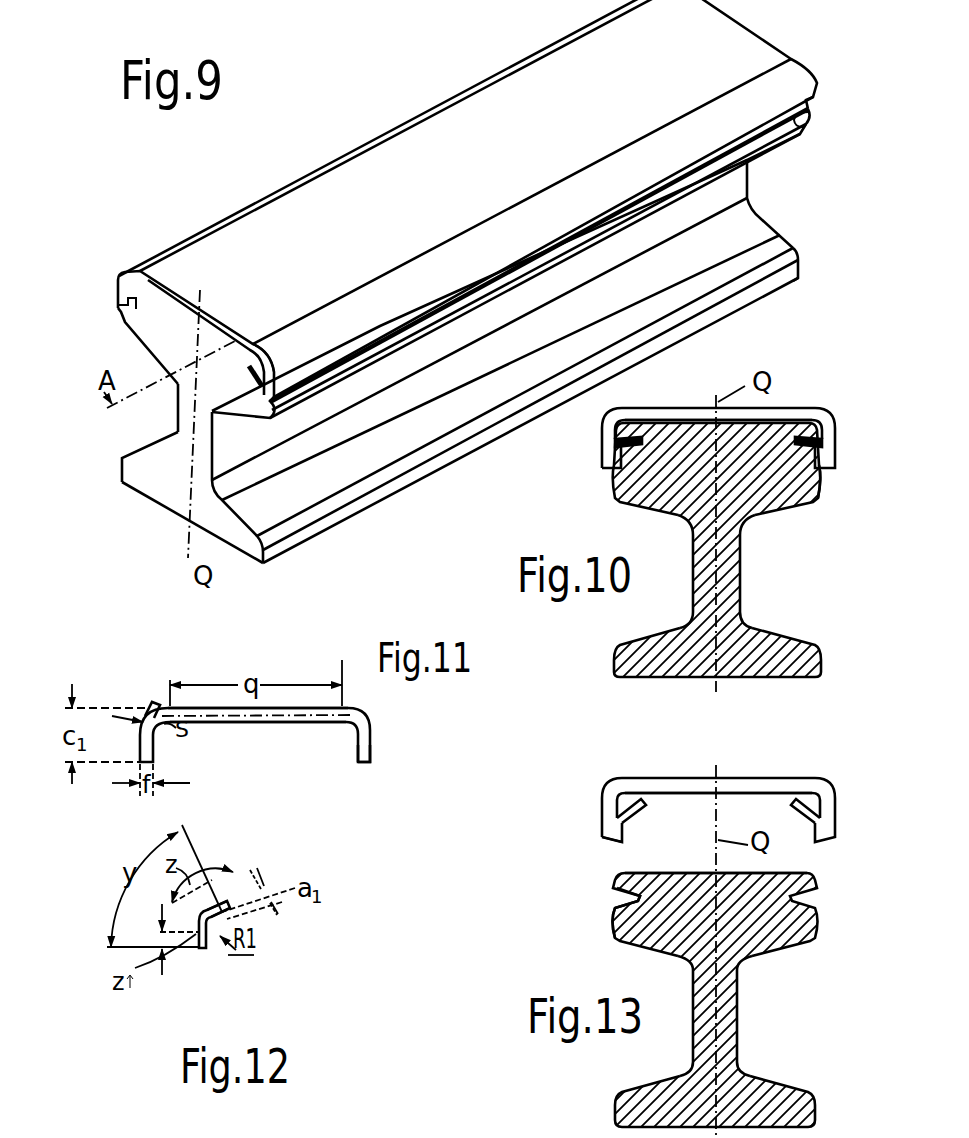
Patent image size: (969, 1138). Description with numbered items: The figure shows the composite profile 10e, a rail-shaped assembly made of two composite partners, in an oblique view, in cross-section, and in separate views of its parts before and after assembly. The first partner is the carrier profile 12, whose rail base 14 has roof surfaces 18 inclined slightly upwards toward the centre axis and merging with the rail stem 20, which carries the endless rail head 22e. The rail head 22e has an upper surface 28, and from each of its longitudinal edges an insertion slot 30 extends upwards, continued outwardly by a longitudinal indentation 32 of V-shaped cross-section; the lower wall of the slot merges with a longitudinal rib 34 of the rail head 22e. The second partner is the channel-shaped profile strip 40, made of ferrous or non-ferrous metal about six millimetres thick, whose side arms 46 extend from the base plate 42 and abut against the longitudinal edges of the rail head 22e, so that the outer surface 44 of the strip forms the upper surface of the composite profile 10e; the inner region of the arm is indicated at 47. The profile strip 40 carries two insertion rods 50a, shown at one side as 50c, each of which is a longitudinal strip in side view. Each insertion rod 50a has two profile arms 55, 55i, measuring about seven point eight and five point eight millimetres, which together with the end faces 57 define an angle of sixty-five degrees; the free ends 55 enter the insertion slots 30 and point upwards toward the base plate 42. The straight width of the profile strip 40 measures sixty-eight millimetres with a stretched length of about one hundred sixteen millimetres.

In FIG. 9, the composite profile 10e is at (368, 110).
In FIG. 10, the composite profile 10e is at (799, 372).
In FIG. 9, the carrier profile 12 is at (168, 521).
In FIG. 9, the rail base 14 is at (378, 445).
In FIG. 10, the rail base 14 is at (640, 658).
In FIG. 13, the rail base 14 is at (617, 1110).
In FIG. 9, the roof surfaces 18 is at (500, 399).
In FIG. 9, the rail stem 20 is at (178, 426).
In FIG. 10, the rail stem 20 is at (747, 578).
In FIG. 13, the rail stem 20 is at (735, 1035).
In FIG. 9, the rail head 22e is at (178, 322).
In FIG. 10, the rail head 22e is at (660, 488).
In FIG. 13, the rail head 22e is at (667, 943).
In FIG. 13, the upper surface 28 is at (677, 868).
In FIG. 13, the insertion slot 30 is at (630, 898).
In FIG. 13, the longitudinal indentation 32 is at (615, 918).
In FIG. 10, the longitudinal rib 34 is at (820, 499).
In FIG. 9, the profile strip 40 is at (308, 208).
In FIG. 10, the profile strip 40 is at (680, 411).
In FIG. 11, the profile strip 40 is at (316, 757).
In FIG. 13, the profile strip 40 is at (792, 777).
In FIG. 10, the base plate 42 is at (640, 419).
In FIG. 11, the base plate 42 is at (242, 723).
In FIG. 13, the base plate 42 is at (698, 793).
In FIG. 9, the outer surface 44 is at (598, 106).
In FIG. 11, the outer surface 44 is at (302, 706).
In FIG. 9, the side arms 46 is at (799, 130).
In FIG. 11, the side arms 46 is at (370, 757).
In FIG. 11, the inner face of cover strip leg 47 is at (358, 764).
In FIG. 9, the insertion rod 50a is at (139, 290).
In FIG. 10, the insertion rod 50a is at (612, 443).
In FIG. 12, the insertion rod 50a is at (272, 949).
In FIG. 10, the hook of cover strip (right) 50c is at (809, 440).
In FIG. 9, the free end 55 is at (277, 363).
In FIG. 12, the free end 55 is at (202, 949).
In FIG. 13, the free end 55 is at (604, 840).
In FIG. 12, the profile arm 55i is at (218, 914).
In FIG. 13, the profile arm 55i is at (641, 808).
In FIG. 12, the end faces 57 is at (232, 915).